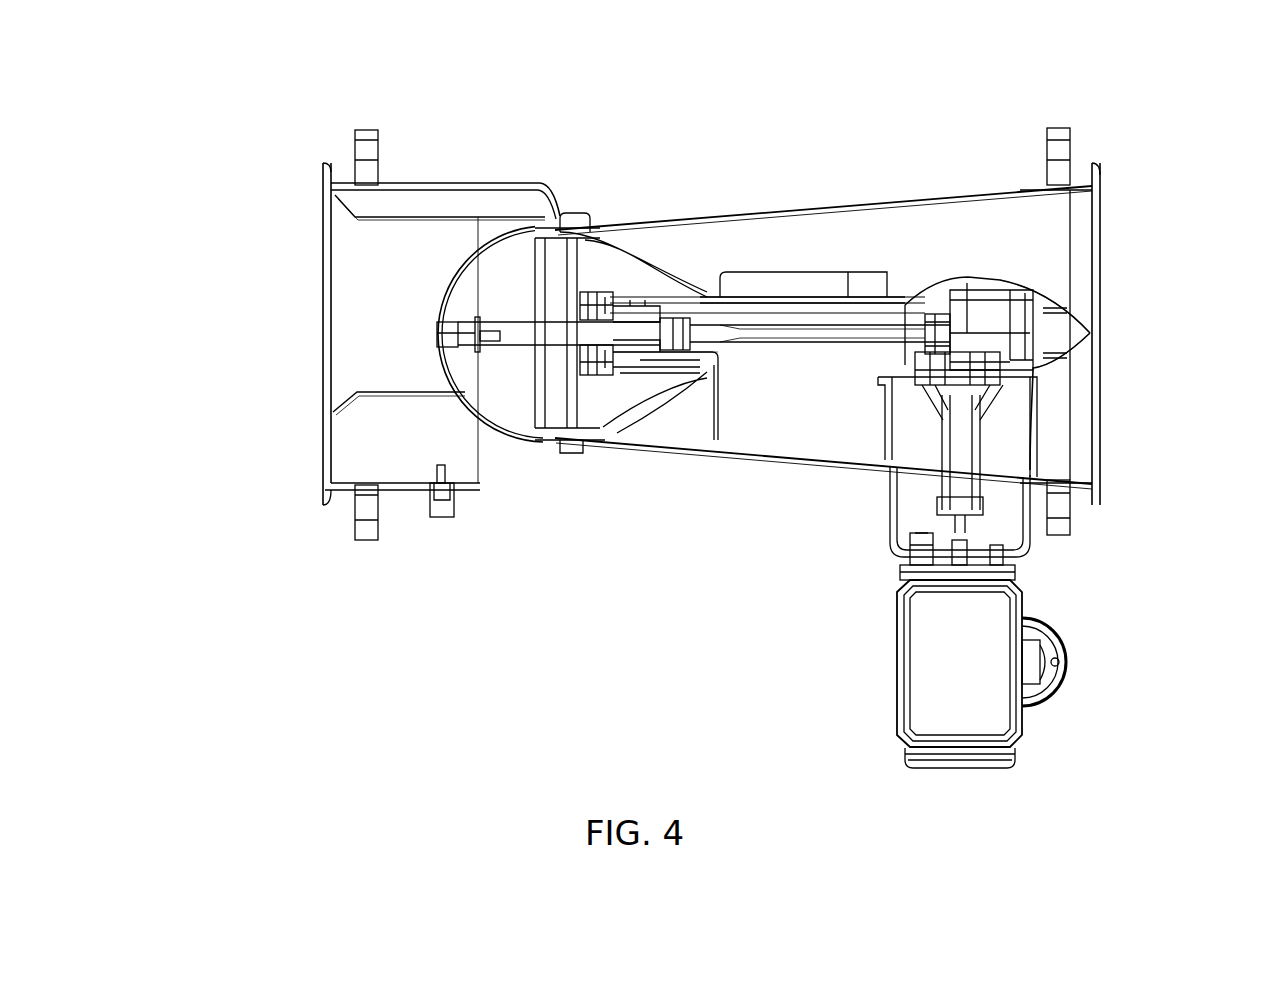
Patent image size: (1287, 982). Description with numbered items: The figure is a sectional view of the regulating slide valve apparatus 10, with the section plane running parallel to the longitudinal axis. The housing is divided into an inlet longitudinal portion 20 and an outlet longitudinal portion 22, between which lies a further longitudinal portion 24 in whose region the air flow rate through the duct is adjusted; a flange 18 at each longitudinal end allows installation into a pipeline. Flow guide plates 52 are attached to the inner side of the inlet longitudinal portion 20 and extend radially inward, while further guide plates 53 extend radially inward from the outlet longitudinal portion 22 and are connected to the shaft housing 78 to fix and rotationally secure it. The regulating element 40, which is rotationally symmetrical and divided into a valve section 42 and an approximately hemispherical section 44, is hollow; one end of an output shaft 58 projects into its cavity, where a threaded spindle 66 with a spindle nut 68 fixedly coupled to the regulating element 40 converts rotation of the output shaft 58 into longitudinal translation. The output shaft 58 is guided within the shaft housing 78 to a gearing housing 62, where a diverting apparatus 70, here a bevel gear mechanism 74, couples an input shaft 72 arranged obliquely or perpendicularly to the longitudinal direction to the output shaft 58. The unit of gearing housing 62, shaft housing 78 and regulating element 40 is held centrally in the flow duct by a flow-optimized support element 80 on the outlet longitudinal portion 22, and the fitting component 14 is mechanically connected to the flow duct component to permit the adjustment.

The regulating slide valve apparatus 10 is at (258, 168).
The fitting component 14 is at (1068, 706).
The flange 18 is at (357, 167).
The inlet longitudinal portion 20 is at (407, 488).
The outlet longitudinal portion 22 is at (834, 228).
The further longitudinal portion 24 is at (578, 222).
The regulating element 40 is at (447, 363).
The valve section 42 is at (604, 432).
The hemispherical section 44 is at (507, 403).
The flow guide plates 52 is at (408, 203).
The guide plates 53 is at (785, 333).
The output shaft 58 is at (785, 342).
The gearing housing 62 is at (933, 300).
The threaded spindle 66 is at (617, 368).
The spindle nut 68 is at (591, 302).
The diverting apparatus 70 is at (990, 313).
The bevel gear mechanism 74 is at (1045, 324).
The input shaft 72 is at (957, 403).
The shaft housing 78 is at (930, 310).
The support element 80 is at (917, 422).